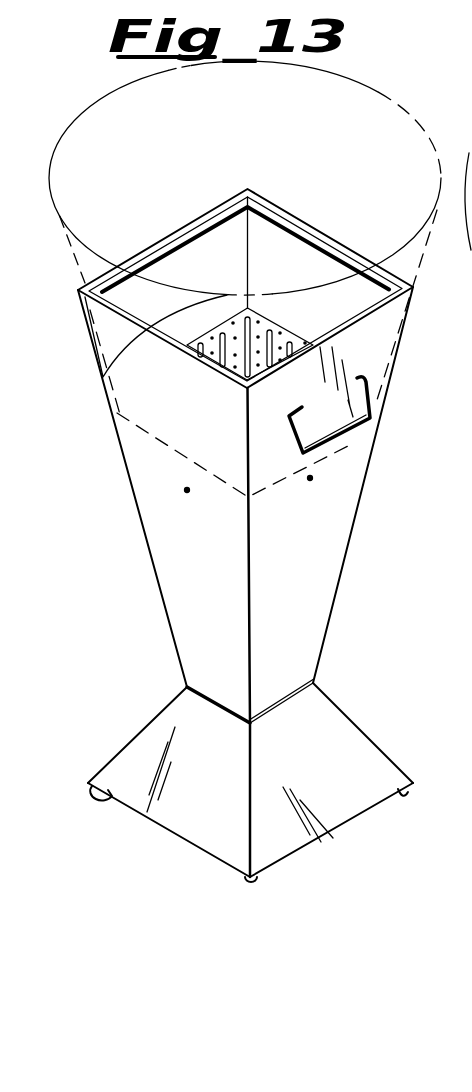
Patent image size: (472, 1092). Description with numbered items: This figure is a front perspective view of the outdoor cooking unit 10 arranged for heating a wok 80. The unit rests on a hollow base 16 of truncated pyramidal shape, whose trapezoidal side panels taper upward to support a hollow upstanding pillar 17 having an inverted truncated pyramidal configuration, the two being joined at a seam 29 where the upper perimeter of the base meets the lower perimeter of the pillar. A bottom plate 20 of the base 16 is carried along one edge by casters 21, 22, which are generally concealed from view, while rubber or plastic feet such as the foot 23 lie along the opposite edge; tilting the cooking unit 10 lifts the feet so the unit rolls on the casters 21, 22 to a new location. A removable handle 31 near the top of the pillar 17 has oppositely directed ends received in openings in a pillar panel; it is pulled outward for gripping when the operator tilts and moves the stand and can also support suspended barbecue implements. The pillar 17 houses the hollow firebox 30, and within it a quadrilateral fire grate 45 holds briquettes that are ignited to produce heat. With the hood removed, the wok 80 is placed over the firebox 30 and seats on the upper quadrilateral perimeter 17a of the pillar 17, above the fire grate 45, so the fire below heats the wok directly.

The outdoor cooking unit 10 is at (242, 564).
The hollow base 16 is at (250, 799).
The hollow upstanding support 17 is at (128, 483).
The upper quadrilateral perimeter 17a is at (104, 368).
The bottom plate 20 is at (200, 850).
The caster 21 is at (103, 805).
The caster 22 is at (252, 884).
The foot 23 is at (399, 800).
The body-to-base joint 29 is at (315, 684).
The hollow firebox 30 is at (287, 478).
The removable handle 31 is at (352, 432).
The fire grate 45 is at (227, 377).
The wok 80 is at (66, 133).